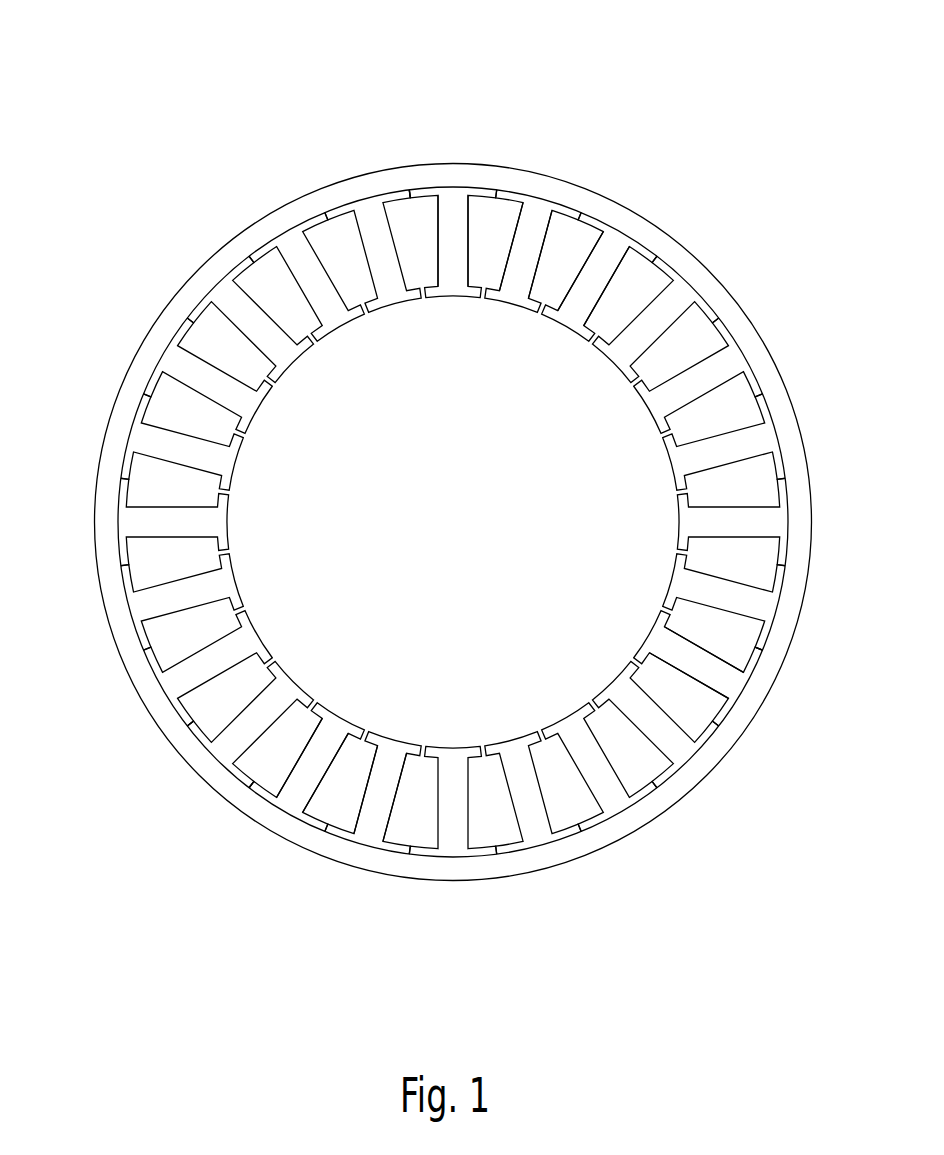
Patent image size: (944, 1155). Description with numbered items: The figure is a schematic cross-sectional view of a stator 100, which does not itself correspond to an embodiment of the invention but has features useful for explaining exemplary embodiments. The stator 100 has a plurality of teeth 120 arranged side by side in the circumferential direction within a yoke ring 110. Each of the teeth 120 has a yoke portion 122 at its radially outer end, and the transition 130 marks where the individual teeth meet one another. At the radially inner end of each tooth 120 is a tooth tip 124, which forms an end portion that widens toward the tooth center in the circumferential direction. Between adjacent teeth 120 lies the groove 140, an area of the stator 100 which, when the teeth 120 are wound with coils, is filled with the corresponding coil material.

The stator 100 is at (152, 92).
The yoke ring 110 is at (650, 220).
The teeth 120 is at (728, 430).
The yoke portion 122 is at (419, 190).
The tooth tip 124 is at (452, 299).
The transition 130 is at (328, 217).
The groove 140 is at (565, 258).